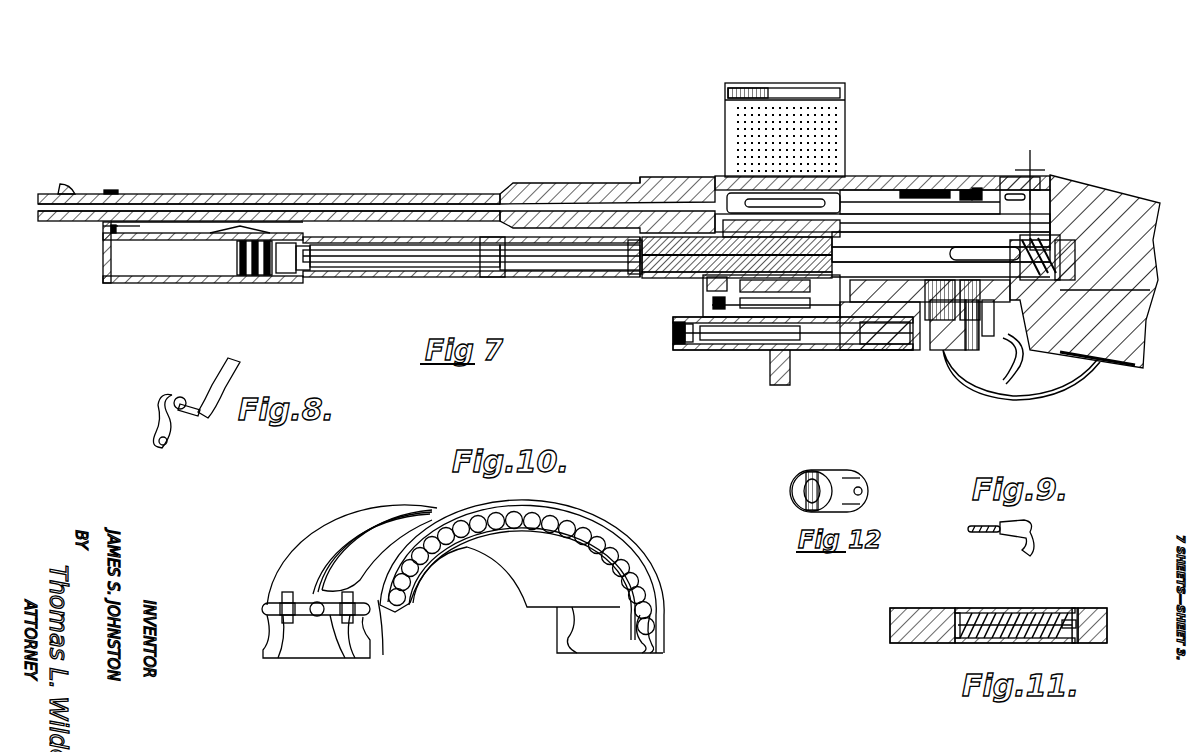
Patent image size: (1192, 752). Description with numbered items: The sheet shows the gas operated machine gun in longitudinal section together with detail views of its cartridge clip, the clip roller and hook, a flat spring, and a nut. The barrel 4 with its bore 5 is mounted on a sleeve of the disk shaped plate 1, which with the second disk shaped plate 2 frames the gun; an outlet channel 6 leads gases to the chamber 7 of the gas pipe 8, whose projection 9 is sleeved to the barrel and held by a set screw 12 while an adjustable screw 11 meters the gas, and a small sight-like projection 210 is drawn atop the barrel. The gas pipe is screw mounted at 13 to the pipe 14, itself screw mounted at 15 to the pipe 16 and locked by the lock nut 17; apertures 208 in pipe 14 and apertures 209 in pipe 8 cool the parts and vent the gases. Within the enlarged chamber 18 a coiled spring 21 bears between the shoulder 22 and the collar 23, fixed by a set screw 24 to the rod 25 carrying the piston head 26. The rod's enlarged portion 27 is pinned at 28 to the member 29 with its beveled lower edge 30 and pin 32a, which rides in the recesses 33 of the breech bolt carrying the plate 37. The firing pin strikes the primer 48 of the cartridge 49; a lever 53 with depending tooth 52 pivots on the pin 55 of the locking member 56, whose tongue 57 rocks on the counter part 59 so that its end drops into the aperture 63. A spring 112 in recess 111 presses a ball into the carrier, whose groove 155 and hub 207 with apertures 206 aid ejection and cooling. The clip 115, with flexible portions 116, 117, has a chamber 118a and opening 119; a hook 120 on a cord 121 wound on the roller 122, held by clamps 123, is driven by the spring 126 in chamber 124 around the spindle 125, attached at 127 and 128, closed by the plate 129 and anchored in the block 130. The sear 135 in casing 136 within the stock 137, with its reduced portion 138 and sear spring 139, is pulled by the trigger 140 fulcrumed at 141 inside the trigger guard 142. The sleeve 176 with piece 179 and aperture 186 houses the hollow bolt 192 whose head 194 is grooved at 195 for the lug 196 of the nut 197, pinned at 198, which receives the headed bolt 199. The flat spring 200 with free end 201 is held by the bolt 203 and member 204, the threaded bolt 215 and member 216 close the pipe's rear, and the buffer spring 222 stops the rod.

In FIG. 7, the disk shaped plate 1 is at (706, 352).
In FIG. 7, the disk shaped plate 2 is at (852, 352).
In FIG. 7, the barrel 4 is at (392, 200).
In FIG. 7, the bore 5 is at (285, 210).
In FIG. 7, the outlet channel 6 is at (122, 228).
In FIG. 7, the chamber 7 is at (180, 262).
In FIG. 7, the gas pipe 8 is at (226, 277).
In FIG. 7, the projection 9 is at (100, 228).
In FIG. 7, the adjustable screw 11 is at (108, 230).
In FIG. 7, the set screw 12 is at (112, 190).
In FIG. 7, the screw mounting 13 is at (298, 276).
In FIG. 7, the pipe 14 is at (392, 278).
In FIG. 7, the screw mounting 15 is at (508, 278).
In FIG. 7, the pipe 16 is at (564, 278).
In FIG. 7, the lock nut 17 is at (492, 278).
In FIG. 7, the enlarged chamber 18 is at (665, 274).
In FIG. 7, the coiled spring 21 is at (680, 280).
In FIG. 7, the shoulder 22 is at (860, 232).
In FIG. 7, the collar 23 is at (632, 270).
In FIG. 7, the set screw 24 is at (625, 262).
In FIG. 7, the rod 25 is at (435, 267).
In FIG. 7, the piston head 26 is at (262, 277).
In FIG. 7, the enlarged portion 27 is at (940, 300).
In FIG. 7, the pin 28 is at (971, 299).
In FIG. 7, the member 29 is at (1070, 360).
In FIG. 7, the beveled lower edge 30 is at (985, 352).
In FIG. 7, the pin 32a is at (1010, 170).
In FIG. 7, the open elongated recesses 33 is at (1015, 194).
In FIG. 7, the plate 37 is at (920, 190).
In FIG. 7, the primer 48 is at (847, 90).
In FIG. 7, the cartridge 49 is at (802, 88).
In FIG. 10, the cartridge 49 is at (536, 520).
In FIG. 7, the depending tooth 52 is at (888, 182).
In FIG. 7, the lever 53 is at (850, 178).
In FIG. 7, the pin 55 is at (966, 189).
In FIG. 7, the locking member 56 is at (980, 188).
In FIG. 7, the tongue 57 is at (1000, 188).
In FIG. 7, the counter part 59 is at (941, 231).
In FIG. 7, the circular aperture 63 is at (1060, 190).
In FIG. 7, the recess 111 is at (712, 285).
In FIG. 7, the coiled spring 112 is at (665, 330).
In FIG. 10, the clip 115 is at (480, 522).
In FIG. 10, the flexible portion 116 is at (318, 660).
In FIG. 10, the flexible portion 117 is at (618, 654).
In FIG. 10, the chamber 118a is at (588, 535).
In FIG. 10, the opening 119 is at (405, 610).
In FIG. 9, the hook 120 is at (1028, 522).
In FIG. 10, the cord 121 is at (374, 548).
In FIG. 9, the cord 121 is at (968, 528).
In FIG. 10, the roller 122 is at (304, 616).
In FIG. 11, the roller 122 is at (924, 612).
In FIG. 10, the clamps 123 is at (288, 594).
In FIG. 11, the chamber 124 is at (990, 616).
In FIG. 11, the spindle 125 is at (1064, 616).
In FIG. 11, the coiled spring 126 is at (1030, 616).
In FIG. 11, the attachment point 127 is at (1070, 640).
In FIG. 11, the attachment point 128 is at (958, 640).
In FIG. 11, the plate 129 is at (1076, 614).
In FIG. 10, the stationary block 130 is at (380, 620).
In FIG. 11, the stationary block 130 is at (1108, 624).
In FIG. 7, the sear 135 is at (965, 345).
In FIG. 7, the casing 136 is at (948, 352).
In FIG. 7, the stock 137 is at (1128, 348).
In FIG. 7, the reduced portion 138 is at (940, 356).
In FIG. 7, the sear spring 139 is at (1118, 289).
In FIG. 7, the trigger 140 is at (1026, 359).
In FIG. 7, the fulcrum 141 is at (992, 338).
In FIG. 7, the trigger guard 142 is at (1020, 402).
In FIG. 7, the groove 155 is at (826, 352).
In FIG. 7, the sleeve 176 is at (740, 350).
In FIG. 7, the transversely disposed piece 179 is at (780, 388).
In FIG. 7, the aperture 186 is at (925, 315).
In FIG. 7, the hollow bolt 192 is at (770, 352).
In FIG. 7, the head 194 is at (872, 352).
In FIG. 7, the groove 195 is at (688, 350).
In FIG. 7, the lug 196 is at (878, 296).
In FIG. 12, the lug 196 is at (790, 491).
In FIG. 7, the nut 197 is at (876, 427).
In FIG. 12, the nut 197 is at (826, 474).
In FIG. 7, the pin 198 is at (904, 352).
In FIG. 7, the headed bolt 199 is at (708, 352).
In FIG. 8, the spring 200 is at (238, 372).
In FIG. 8, the free end 201 is at (238, 366).
In FIG. 8, the bolt 203 is at (184, 398).
In FIG. 8, the member 204 is at (163, 416).
In FIG. 7, the apertures 206 is at (750, 205).
In FIG. 7, the hub 207 is at (724, 352).
In FIG. 7, the apertures 208 is at (360, 240).
In FIG. 7, the apertures 209 is at (238, 234).
In FIG. 7, the front sight 210 is at (64, 186).
In FIG. 7, the threaded bolt 215 is at (1065, 240).
In FIG. 7, the member 216 is at (1045, 190).
In FIG. 7, the buffer spring 222 is at (1032, 166).